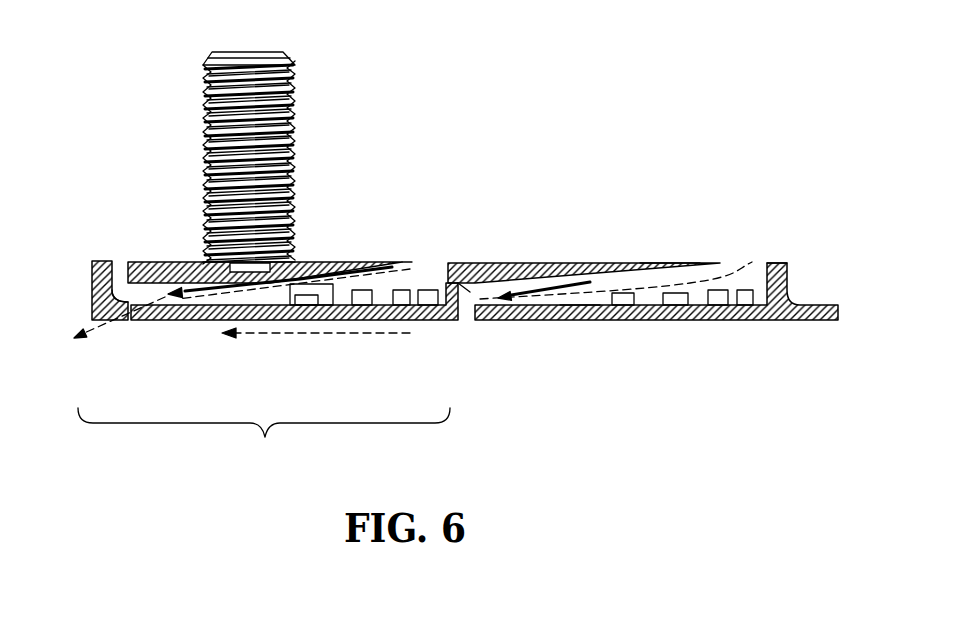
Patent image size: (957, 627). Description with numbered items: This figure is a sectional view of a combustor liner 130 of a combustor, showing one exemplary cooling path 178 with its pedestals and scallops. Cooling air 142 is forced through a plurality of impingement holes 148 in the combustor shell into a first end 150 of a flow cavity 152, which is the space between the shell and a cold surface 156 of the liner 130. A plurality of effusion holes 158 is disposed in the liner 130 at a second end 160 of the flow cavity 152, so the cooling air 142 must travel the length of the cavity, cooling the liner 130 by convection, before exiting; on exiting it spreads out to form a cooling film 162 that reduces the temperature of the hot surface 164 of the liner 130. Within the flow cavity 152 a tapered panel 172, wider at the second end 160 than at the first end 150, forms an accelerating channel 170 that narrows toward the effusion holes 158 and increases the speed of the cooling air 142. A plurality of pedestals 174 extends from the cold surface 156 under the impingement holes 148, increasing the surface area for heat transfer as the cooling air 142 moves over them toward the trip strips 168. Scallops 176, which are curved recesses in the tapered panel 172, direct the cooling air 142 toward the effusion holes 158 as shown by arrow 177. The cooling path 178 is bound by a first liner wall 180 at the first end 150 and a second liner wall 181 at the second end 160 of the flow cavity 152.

The combustor liner 130 is at (522, 318).
The cooling air 142 is at (527, 262).
The impingement holes 148 is at (420, 262).
The first end 150 is at (437, 263).
The flow cavity 152 is at (370, 300).
The cold surface 156 is at (660, 263).
The effusion holes 158 is at (124, 320).
The second end 160 is at (137, 300).
The cooling film 162 is at (262, 334).
The hot surface 164 is at (652, 283).
The trip strips 168 is at (356, 300).
The accelerating channel 170 is at (365, 262).
The tapered panel 172 is at (150, 268).
The pedestals 174 is at (424, 304).
The scallops 176 is at (293, 262).
The arrow 177 is at (582, 318).
The cooling path 178 is at (264, 442).
The first liner wall 180 is at (458, 312).
The second liner wall 181 is at (92, 303).